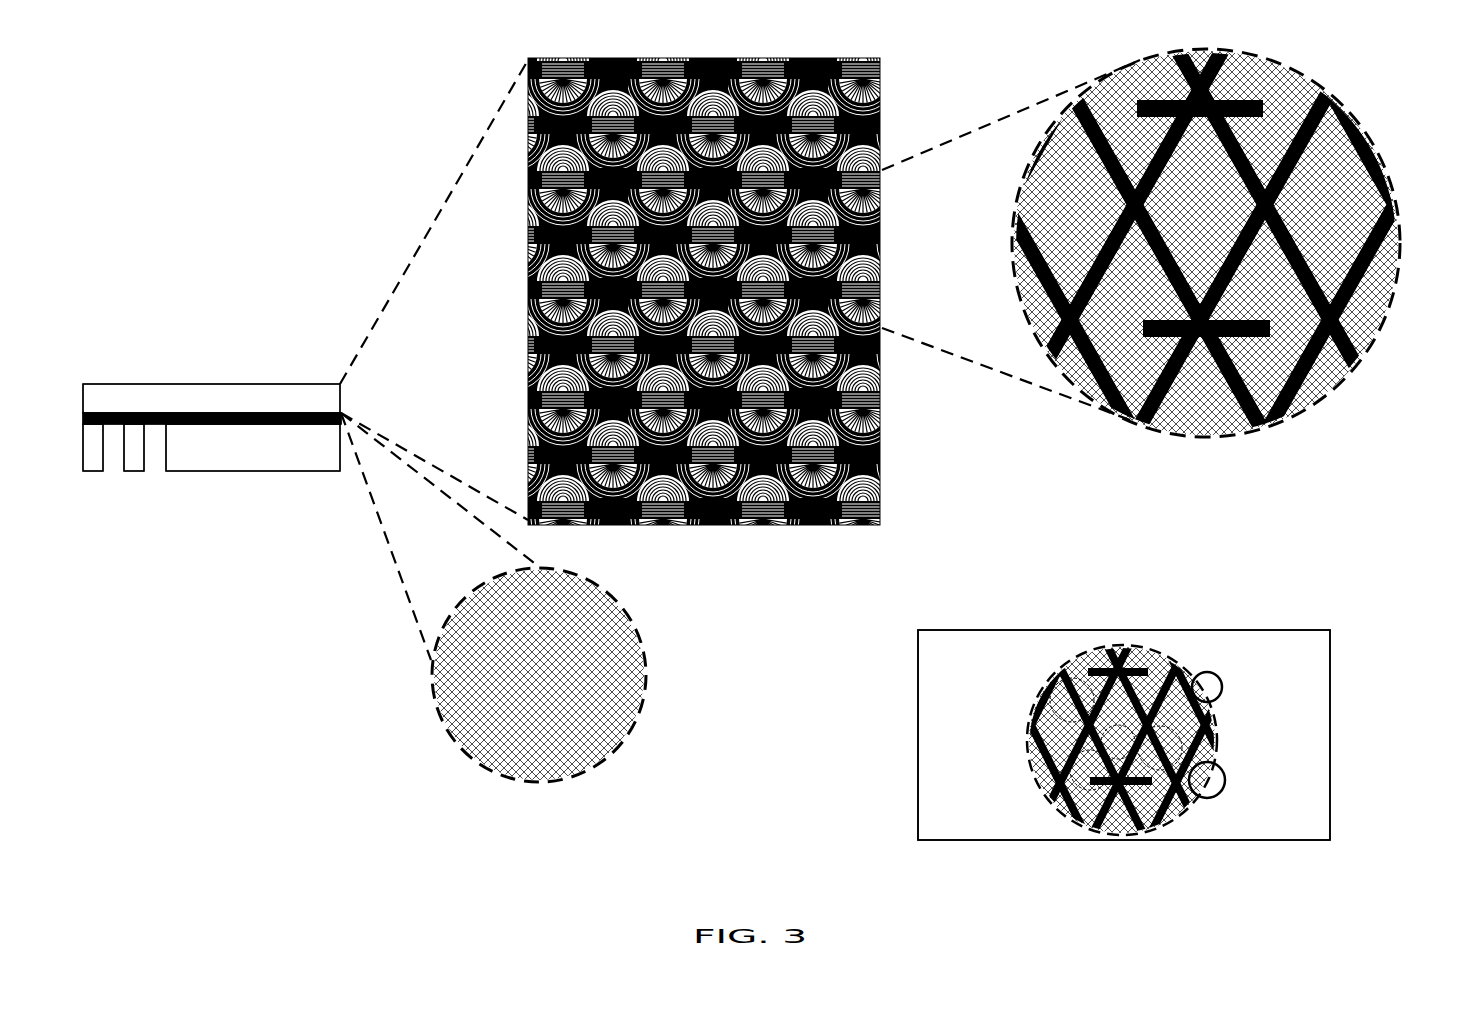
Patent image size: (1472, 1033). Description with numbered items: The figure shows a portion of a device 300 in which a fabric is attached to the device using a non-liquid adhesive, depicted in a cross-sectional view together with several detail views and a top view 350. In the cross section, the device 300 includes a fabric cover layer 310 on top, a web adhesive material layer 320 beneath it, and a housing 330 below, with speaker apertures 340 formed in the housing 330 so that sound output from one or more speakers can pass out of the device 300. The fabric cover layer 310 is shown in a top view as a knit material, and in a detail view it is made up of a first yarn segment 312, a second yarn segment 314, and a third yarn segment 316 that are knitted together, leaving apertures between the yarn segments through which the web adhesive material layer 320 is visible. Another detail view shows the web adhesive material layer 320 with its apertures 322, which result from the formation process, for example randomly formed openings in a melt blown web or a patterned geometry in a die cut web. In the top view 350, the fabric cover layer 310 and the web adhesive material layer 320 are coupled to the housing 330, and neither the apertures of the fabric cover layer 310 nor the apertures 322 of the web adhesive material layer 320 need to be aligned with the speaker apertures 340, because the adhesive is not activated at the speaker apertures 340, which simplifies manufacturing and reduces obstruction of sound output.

The device 300 is at (258, 320).
The fabric cover layer 310 is at (240, 384).
The first yarn segment 312 is at (1240, 148).
The second yarn segment 314 is at (1388, 175).
The third yarn segment 316 is at (1388, 298).
The web adhesive material layer 320 is at (341, 413).
The apertures 322 is at (610, 670).
The housing 330 is at (226, 472).
The speaker apertures 340 is at (115, 468).
The top view 350 is at (1305, 612).